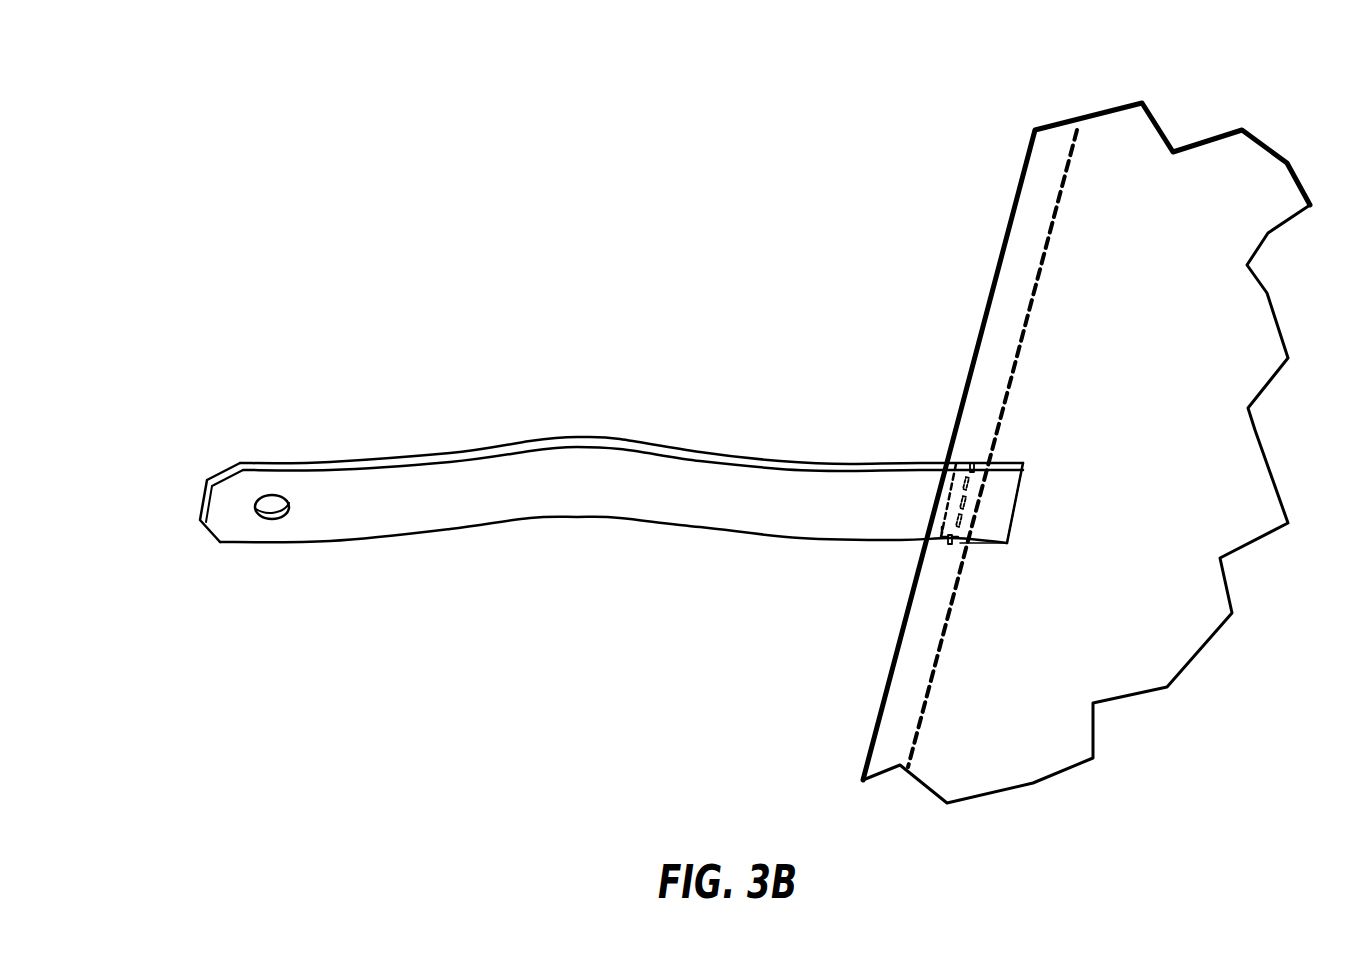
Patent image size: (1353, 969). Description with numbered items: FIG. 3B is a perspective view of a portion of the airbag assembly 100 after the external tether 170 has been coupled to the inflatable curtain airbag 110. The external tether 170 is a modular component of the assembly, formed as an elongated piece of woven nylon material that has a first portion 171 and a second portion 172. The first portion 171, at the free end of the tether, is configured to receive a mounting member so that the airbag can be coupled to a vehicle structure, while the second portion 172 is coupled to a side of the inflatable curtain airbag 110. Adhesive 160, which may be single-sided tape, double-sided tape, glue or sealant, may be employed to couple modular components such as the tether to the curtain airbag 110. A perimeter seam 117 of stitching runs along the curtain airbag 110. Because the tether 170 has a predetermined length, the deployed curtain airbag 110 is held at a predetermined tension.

The airbag assembly 100 is at (557, 146).
The inflatable curtain airbag 110 is at (963, 314).
The perimeter seam 117 is at (1052, 225).
The adhesive 160 is at (945, 508).
The external tether 170 is at (593, 424).
The first portion 171 is at (320, 500).
The second portion 172 is at (1003, 481).